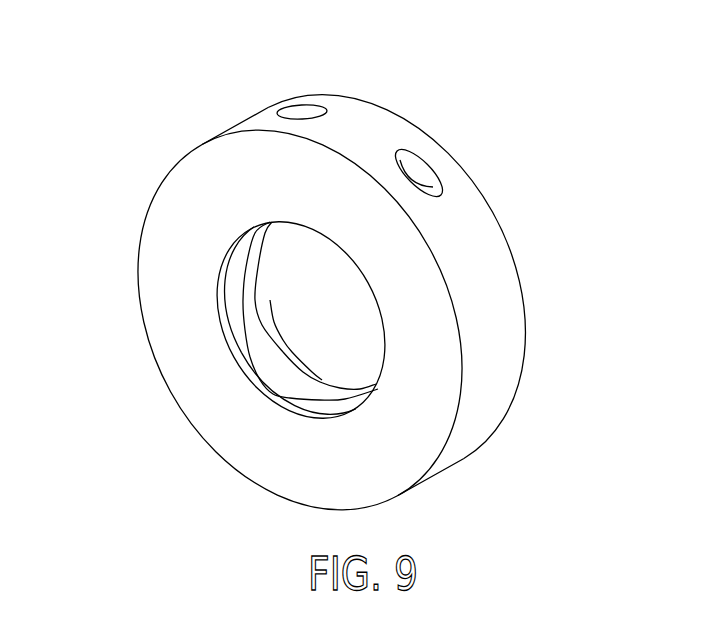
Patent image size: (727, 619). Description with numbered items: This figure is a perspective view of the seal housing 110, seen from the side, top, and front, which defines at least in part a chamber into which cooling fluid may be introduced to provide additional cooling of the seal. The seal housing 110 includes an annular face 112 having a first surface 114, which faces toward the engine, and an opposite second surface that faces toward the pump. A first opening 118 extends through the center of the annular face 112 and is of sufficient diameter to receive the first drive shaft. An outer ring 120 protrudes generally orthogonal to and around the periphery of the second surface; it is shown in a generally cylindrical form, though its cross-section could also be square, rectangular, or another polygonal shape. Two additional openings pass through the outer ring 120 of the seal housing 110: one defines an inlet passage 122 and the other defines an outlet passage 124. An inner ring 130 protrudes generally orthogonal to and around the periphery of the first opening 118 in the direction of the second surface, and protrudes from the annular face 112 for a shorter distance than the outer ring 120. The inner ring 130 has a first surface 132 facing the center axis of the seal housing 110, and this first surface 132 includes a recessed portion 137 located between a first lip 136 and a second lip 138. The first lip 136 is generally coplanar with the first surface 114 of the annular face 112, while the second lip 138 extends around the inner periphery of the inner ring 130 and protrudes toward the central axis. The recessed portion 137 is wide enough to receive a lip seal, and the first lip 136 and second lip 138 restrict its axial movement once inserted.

The seal housing 110 is at (331, 303).
The annular face 112 is at (182, 330).
The first surface 114 is at (195, 378).
The first opening 118 is at (265, 388).
The outer ring 120 is at (502, 337).
The inlet passage 122 is at (300, 111).
The outlet passage 124 is at (415, 168).
The inner ring 130 is at (242, 300).
The first surface 132 is at (298, 392).
The first lip 136 is at (220, 297).
The recessed portion 137 is at (250, 343).
The second lip 138 is at (305, 385).